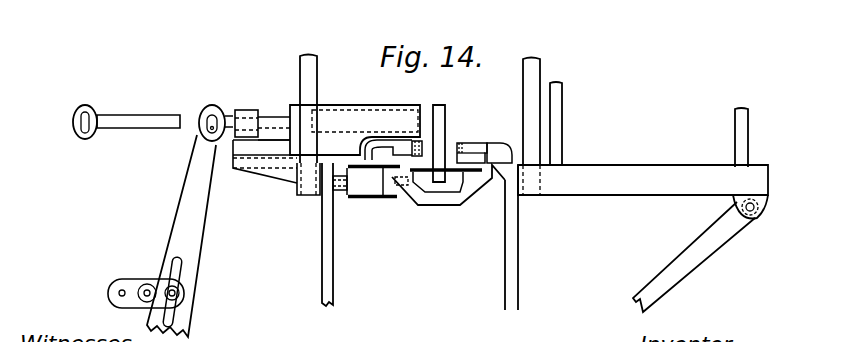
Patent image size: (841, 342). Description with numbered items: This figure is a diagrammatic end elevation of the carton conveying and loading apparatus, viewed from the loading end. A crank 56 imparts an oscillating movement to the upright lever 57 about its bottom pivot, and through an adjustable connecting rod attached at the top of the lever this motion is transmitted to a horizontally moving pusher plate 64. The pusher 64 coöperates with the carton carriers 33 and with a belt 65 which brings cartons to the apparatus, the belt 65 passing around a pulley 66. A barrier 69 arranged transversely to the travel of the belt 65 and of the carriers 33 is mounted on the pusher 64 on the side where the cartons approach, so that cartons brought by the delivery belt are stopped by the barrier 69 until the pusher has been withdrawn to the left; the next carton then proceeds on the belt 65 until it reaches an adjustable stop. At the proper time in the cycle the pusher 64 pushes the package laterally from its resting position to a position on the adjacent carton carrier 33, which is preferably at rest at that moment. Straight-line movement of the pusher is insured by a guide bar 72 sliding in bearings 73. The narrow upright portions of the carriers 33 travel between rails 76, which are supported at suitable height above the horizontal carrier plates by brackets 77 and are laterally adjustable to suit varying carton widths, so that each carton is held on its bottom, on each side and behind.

The guide bar 72 is at (121, 115).
The bearings 73 is at (248, 108).
The upright lever 57 is at (186, 221).
The crank arm 56 is at (152, 280).
The barrier 69 is at (360, 108).
The carton carriers 33 is at (438, 141).
The pusher plate 64 is at (426, 106).
The rails 76 is at (465, 150).
The brackets 77 is at (498, 152).
The belt 65 is at (377, 168).
The pulley 66 is at (399, 187).